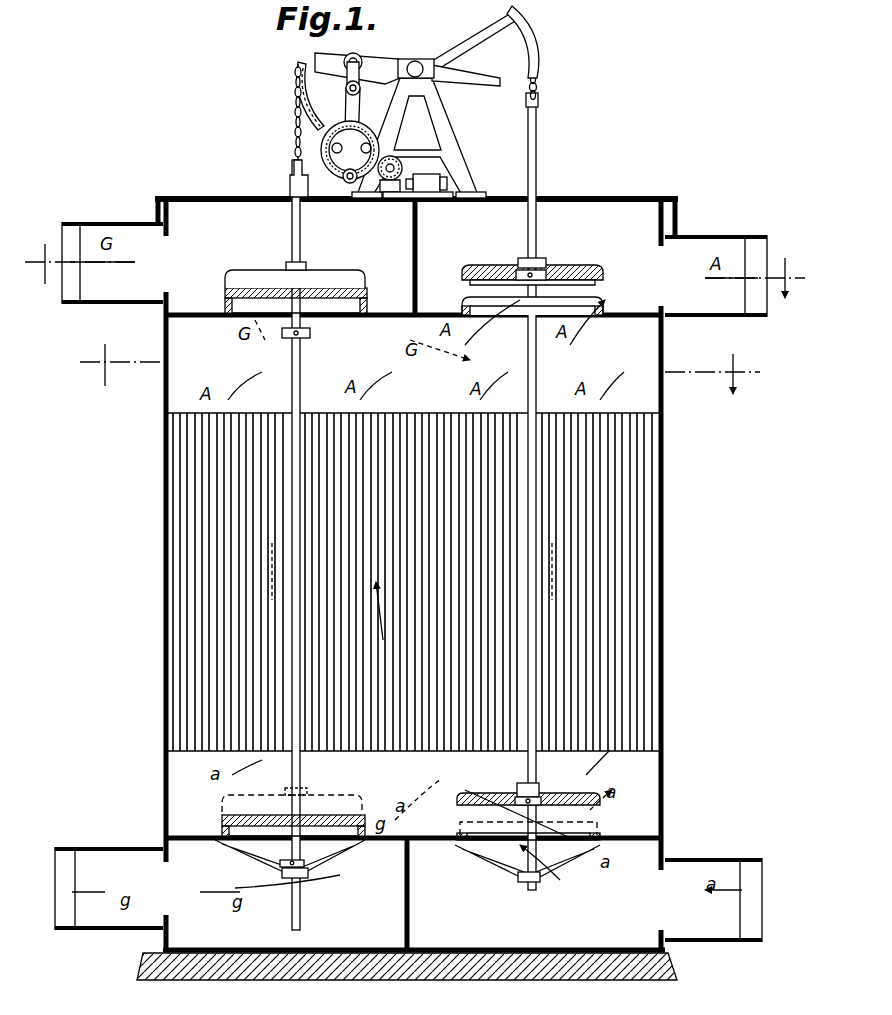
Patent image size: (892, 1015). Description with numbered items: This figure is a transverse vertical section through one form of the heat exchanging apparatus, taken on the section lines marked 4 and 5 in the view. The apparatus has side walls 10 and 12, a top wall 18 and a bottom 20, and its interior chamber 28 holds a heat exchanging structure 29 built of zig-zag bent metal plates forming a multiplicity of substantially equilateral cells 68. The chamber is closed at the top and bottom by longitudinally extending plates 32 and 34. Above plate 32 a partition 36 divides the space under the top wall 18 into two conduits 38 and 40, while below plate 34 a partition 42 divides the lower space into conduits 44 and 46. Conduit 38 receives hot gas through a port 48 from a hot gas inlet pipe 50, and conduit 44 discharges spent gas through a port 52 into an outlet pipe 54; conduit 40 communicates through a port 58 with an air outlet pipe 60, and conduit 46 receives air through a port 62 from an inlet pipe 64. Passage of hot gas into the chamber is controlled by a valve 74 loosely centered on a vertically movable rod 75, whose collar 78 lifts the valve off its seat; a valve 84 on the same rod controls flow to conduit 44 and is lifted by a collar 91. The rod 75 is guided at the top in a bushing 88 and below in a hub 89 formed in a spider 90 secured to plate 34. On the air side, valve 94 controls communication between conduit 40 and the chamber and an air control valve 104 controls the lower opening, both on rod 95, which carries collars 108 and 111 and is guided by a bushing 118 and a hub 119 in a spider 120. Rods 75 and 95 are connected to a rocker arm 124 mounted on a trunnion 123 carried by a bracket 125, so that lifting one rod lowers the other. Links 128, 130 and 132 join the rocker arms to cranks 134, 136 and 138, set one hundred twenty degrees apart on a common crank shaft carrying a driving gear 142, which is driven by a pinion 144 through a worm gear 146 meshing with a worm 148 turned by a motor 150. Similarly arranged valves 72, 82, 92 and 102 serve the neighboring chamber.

The section line 4- 4 is at (411, 267).
The section line 5- 5 is at (424, 369).
The side wall 10 is at (164, 566).
The side wall 12 is at (663, 598).
The top wall 18 is at (198, 197).
The bottom 20 is at (368, 948).
The chamber 28 is at (684, 770).
The heat exchanging structure 29 is at (410, 416).
The plate 32 is at (206, 318).
The plate 34 is at (195, 836).
The partition 36 is at (412, 250).
The conduit 38 is at (188, 212).
The conduit 40 is at (547, 218).
The partition 42 is at (412, 884).
The conduit 44 is at (256, 940).
The conduit 46 is at (530, 945).
The port 48 is at (168, 272).
The hot gas inlet pipe 50 is at (122, 223).
The port 52 is at (168, 880).
The spent gas outlet pipe 54 is at (104, 848).
The port 58 is at (664, 300).
The air outlet pipe 60 is at (762, 236).
The port 62 is at (660, 914).
The inlet pipe 64 is at (748, 859).
The cells 68 is at (612, 670).
The valve 72 is at (348, 270).
The valve 74 is at (368, 298).
The valve rod 75 is at (290, 240).
The collar 78 is at (311, 336).
The valve 82 is at (342, 800).
The valve 84 is at (362, 820).
The bushing 88 is at (290, 208).
The hub 89 is at (309, 876).
The spider 90 is at (340, 862).
The collar 91 is at (284, 860).
The valve 92 is at (606, 296).
The valve 94 is at (478, 262).
The valve rod 95 is at (528, 344).
The air control valve 102 is at (598, 826).
The air control valve 104 is at (592, 794).
The collar 108 is at (548, 272).
The collar 111 is at (516, 798).
The bushing 118 is at (538, 190).
The hub 119 is at (541, 878).
The spider 120 is at (588, 860).
The trunnion 123 is at (422, 62).
The rocker arm 124 is at (410, 58).
The bracket 125 is at (440, 155).
The link 128 is at (352, 55).
The link 130 is at (362, 62).
The link 132 is at (368, 108).
The crank 134 is at (322, 146).
The crank 136 is at (348, 164).
The crank 138 is at (296, 182).
The driving gear 142 is at (310, 128).
The pinion 144 is at (395, 158).
The worm gear 146 is at (404, 166).
The worm 148 is at (394, 199).
The motor 150 is at (442, 180).